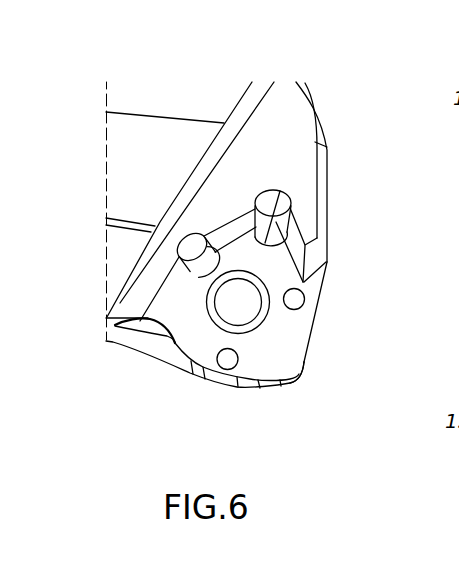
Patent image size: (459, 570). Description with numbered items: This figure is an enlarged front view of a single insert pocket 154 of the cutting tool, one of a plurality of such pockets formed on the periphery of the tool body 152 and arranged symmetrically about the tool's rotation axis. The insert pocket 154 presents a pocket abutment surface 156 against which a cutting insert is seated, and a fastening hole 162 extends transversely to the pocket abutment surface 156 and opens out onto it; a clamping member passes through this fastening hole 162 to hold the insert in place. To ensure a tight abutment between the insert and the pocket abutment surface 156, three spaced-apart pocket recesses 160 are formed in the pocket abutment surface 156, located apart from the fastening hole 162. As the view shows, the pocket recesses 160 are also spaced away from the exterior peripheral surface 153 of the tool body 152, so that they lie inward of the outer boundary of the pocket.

The tool body 152 is at (166, 94).
The exterior peripheral surface 153 is at (310, 348).
The insert pocket 154 is at (317, 317).
The pocket abutment surface 156 is at (275, 347).
The pocket recesses 160 is at (202, 266).
The fastening hole 162 is at (230, 310).